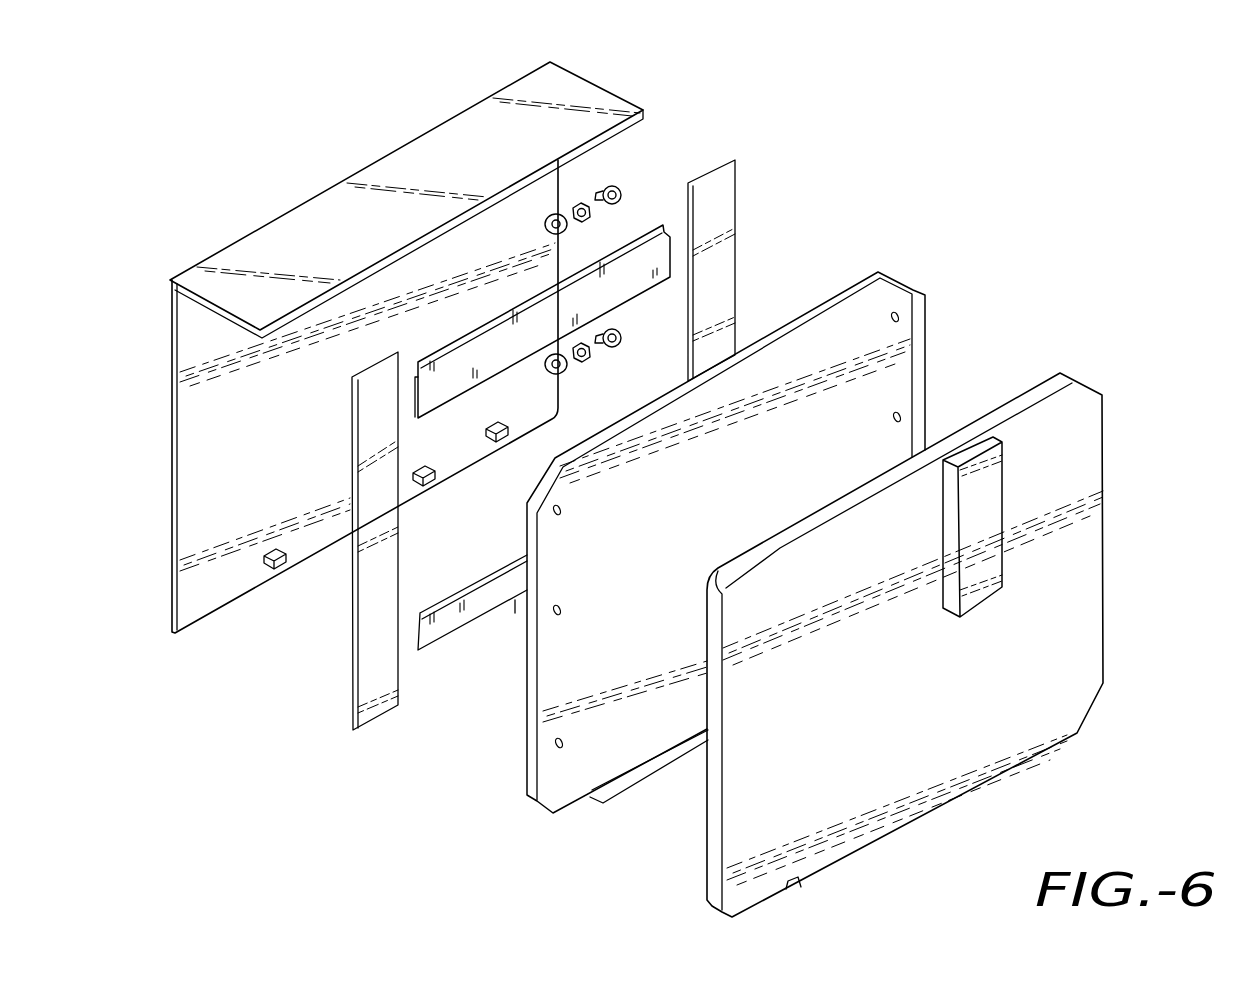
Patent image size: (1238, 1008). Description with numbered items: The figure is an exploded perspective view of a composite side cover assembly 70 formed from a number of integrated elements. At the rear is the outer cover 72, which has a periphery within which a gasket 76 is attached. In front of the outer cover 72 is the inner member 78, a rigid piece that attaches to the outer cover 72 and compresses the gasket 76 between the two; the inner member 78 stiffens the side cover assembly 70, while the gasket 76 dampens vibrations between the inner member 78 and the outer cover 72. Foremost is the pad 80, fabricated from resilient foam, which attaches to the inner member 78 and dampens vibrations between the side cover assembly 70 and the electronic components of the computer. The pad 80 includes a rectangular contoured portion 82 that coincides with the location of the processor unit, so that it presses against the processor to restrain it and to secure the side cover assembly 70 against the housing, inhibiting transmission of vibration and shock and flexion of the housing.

The side cover assembly 70 is at (1058, 202).
The outer cover 72 is at (405, 160).
The gasket 76 is at (723, 197).
The inner member 78 is at (882, 292).
The pad 80 is at (1078, 402).
The contoured portion 82 is at (983, 497).